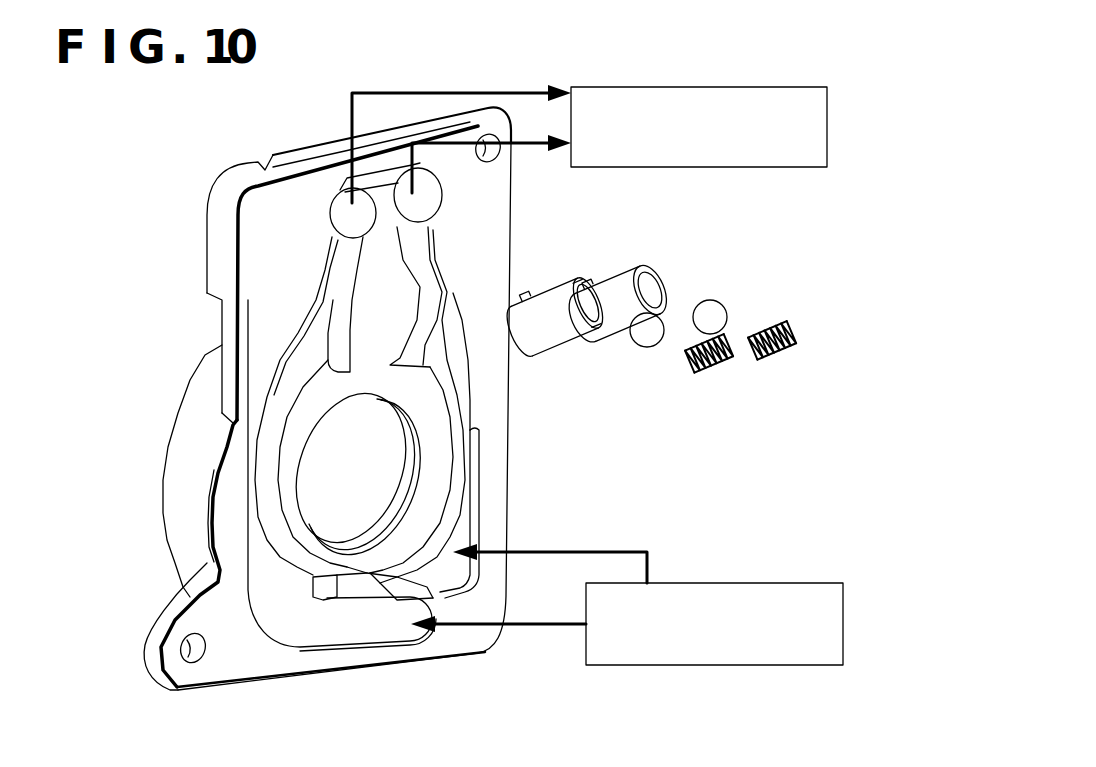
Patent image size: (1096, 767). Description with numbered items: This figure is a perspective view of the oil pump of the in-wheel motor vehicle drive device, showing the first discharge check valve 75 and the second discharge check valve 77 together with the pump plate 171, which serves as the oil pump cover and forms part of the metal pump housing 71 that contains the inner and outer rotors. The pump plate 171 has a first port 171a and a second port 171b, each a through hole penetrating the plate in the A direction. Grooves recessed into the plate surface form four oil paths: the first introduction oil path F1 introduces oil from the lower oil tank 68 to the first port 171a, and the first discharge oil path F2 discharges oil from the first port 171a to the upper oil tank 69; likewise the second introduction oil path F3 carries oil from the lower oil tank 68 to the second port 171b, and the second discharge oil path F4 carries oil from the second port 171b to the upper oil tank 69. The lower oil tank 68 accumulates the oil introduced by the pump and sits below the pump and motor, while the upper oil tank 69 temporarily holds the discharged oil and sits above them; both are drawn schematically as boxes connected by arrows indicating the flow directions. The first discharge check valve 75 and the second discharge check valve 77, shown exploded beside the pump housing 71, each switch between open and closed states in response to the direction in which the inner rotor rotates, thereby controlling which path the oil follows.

The lower oil tank 68 is at (790, 583).
The upper oil tank 69 is at (830, 120).
The pump housing 71 is at (527, 247).
The first discharge check valve 75 is at (742, 300).
The second discharge check valve 77 is at (644, 362).
The pump plate 171 is at (500, 366).
The first port 171a is at (452, 410).
The second port 171b is at (273, 455).
The first introduction oil path F1 is at (465, 507).
The first discharge oil path F2 is at (433, 280).
The second introduction oil path F3 is at (347, 632).
The second discharge oil path F4 is at (303, 330).